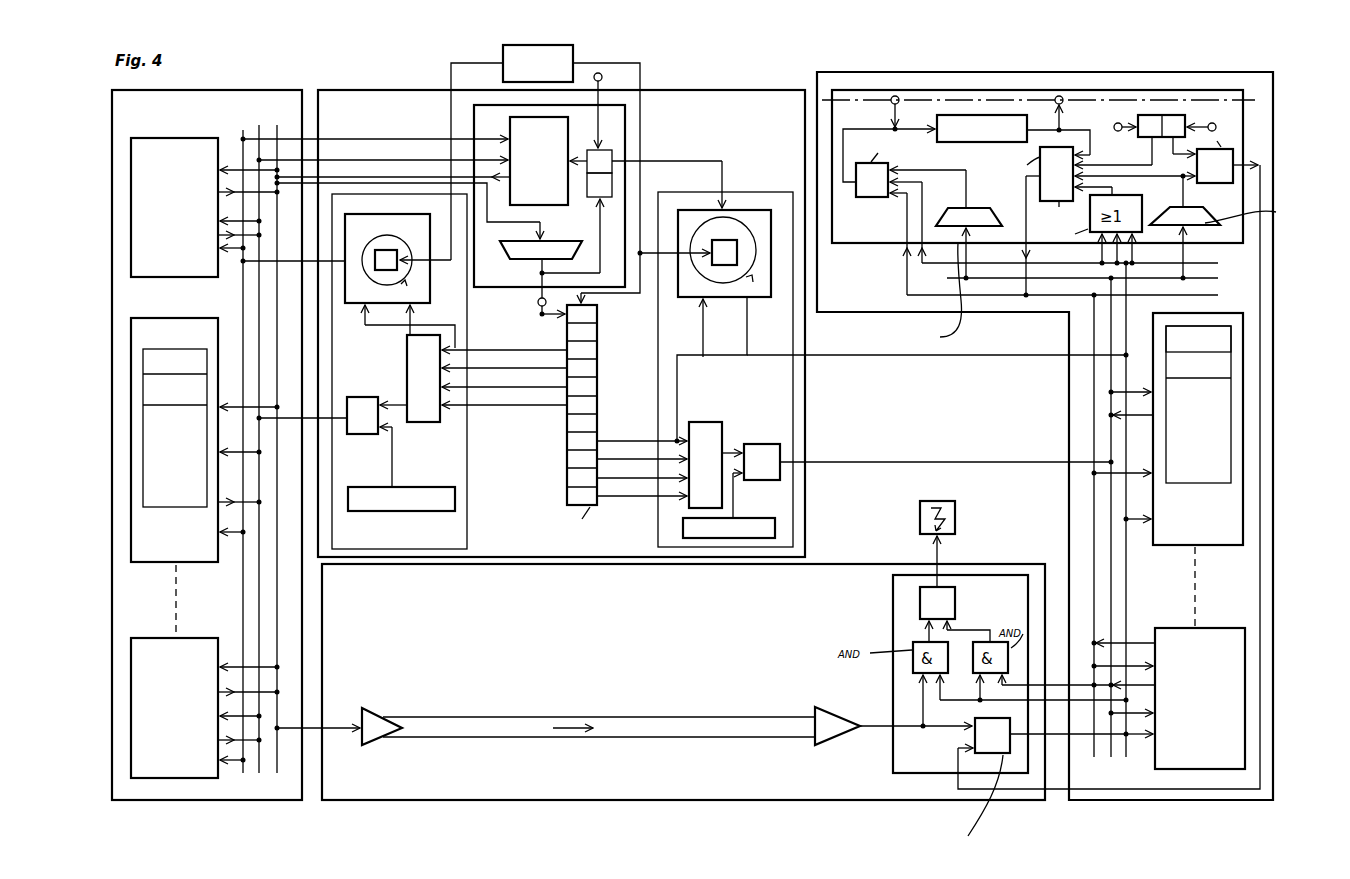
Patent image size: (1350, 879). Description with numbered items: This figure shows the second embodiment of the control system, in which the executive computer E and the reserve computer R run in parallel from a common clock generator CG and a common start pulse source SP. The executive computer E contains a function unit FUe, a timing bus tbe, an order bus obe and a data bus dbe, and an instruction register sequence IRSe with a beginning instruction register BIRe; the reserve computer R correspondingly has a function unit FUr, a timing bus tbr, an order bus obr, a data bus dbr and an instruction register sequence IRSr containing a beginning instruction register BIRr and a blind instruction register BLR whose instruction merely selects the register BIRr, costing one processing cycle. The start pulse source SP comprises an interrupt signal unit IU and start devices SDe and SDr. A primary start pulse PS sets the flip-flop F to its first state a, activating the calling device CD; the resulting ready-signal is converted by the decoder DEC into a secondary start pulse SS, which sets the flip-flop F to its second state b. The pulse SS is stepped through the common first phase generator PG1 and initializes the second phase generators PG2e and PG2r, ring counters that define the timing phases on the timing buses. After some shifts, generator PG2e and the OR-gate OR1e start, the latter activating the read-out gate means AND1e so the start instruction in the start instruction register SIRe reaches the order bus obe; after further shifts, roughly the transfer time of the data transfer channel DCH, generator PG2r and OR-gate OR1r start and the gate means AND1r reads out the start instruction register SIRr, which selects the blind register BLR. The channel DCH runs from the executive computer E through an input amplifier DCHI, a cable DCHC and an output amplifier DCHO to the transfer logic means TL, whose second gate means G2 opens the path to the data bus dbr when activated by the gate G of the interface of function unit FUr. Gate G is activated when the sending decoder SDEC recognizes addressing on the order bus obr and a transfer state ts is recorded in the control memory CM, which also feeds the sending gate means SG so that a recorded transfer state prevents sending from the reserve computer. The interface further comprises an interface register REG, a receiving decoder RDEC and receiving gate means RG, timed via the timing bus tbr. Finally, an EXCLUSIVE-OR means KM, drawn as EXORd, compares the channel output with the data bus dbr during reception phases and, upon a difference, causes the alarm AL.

The executive computer E is at (246, 90).
The function unit of the executive computer FUe is at (189, 279).
The timing bus of the executive computer tbe is at (243, 136).
The order bus of the executive computer obe is at (259, 125).
The data bus of the executive computer dbe is at (284, 114).
The instruction register sequence of the executive computer IRSe is at (174, 440).
The beginning instruction register of the executive computer BIRe is at (175, 428).
The start pulse source SP is at (806, 398).
The start device of the executive computer SDe is at (468, 524).
The second phase generator of the executive computer PG2e is at (351, 304).
The first OR-gate of the executive computer OR1e is at (430, 422).
The first read-out gate means AND1e is at (371, 431).
The start instruction register of the executive computer SIRe is at (421, 482).
The clock generator CG is at (575, 52).
The primary start pulse PS is at (608, 107).
The interrupt signal unit IU is at (627, 128).
The calling device CD is at (545, 205).
The first stable state of the flip-flop a is at (646, 179).
The second stable state of the flip-flop b is at (599, 185).
The flip-flop F is at (605, 200).
The decoder of the interrupt signal unit DEC is at (534, 269).
The secondary start pulse SS is at (537, 304).
The first phase generator PG1 is at (566, 460).
The start device of the reserve computer SDr is at (759, 192).
The second phase generator of the reserve computer PG2r is at (697, 210).
The OR-gate of the reserve computer OR1r is at (715, 454).
The read-out gate means of the reserve computer AND1r is at (919, 471).
The start instruction register of the reserve computer SIRr is at (757, 512).
The reserve computer R is at (1032, 72).
The function unit of the reserve computer FUr is at (863, 243).
The interface register REG is at (1010, 144).
The receiving gate means RG is at (909, 218).
The timing bus of the reserve computer tbr is at (1083, 265).
The order bus of the reserve computer obr is at (1064, 281).
The data bus of the reserve computer dbr is at (1077, 298).
The receiving decoder RDEC is at (934, 265).
The sending gate means SG is at (1092, 221).
The control memory CM is at (1161, 140).
The transfer state ts is at (1150, 138).
The gate of the function unit interface G is at (1222, 185).
The sending decoder SDEC is at (1168, 206).
The instruction register sequence of the reserve computer IRSr is at (1198, 429).
The beginning instruction register of the reserve computer BIRr is at (1198, 404).
The blind instruction register BLR is at (1198, 339).
The data transfer channel DCH is at (856, 558).
The input amplifier of the data transfer channel DCHI is at (373, 711).
The cable of the data transfer channel DCHC is at (562, 713).
The output amplifier of the data transfer channel DCHO is at (832, 746).
The transfer logic means TL is at (893, 747).
The alarm AL is at (957, 511).
The EXCLUSIVE-OR means KM is at (918, 607).
The exclusive OR gate EXORd is at (965, 614).
The second gate means G2 is at (973, 738).